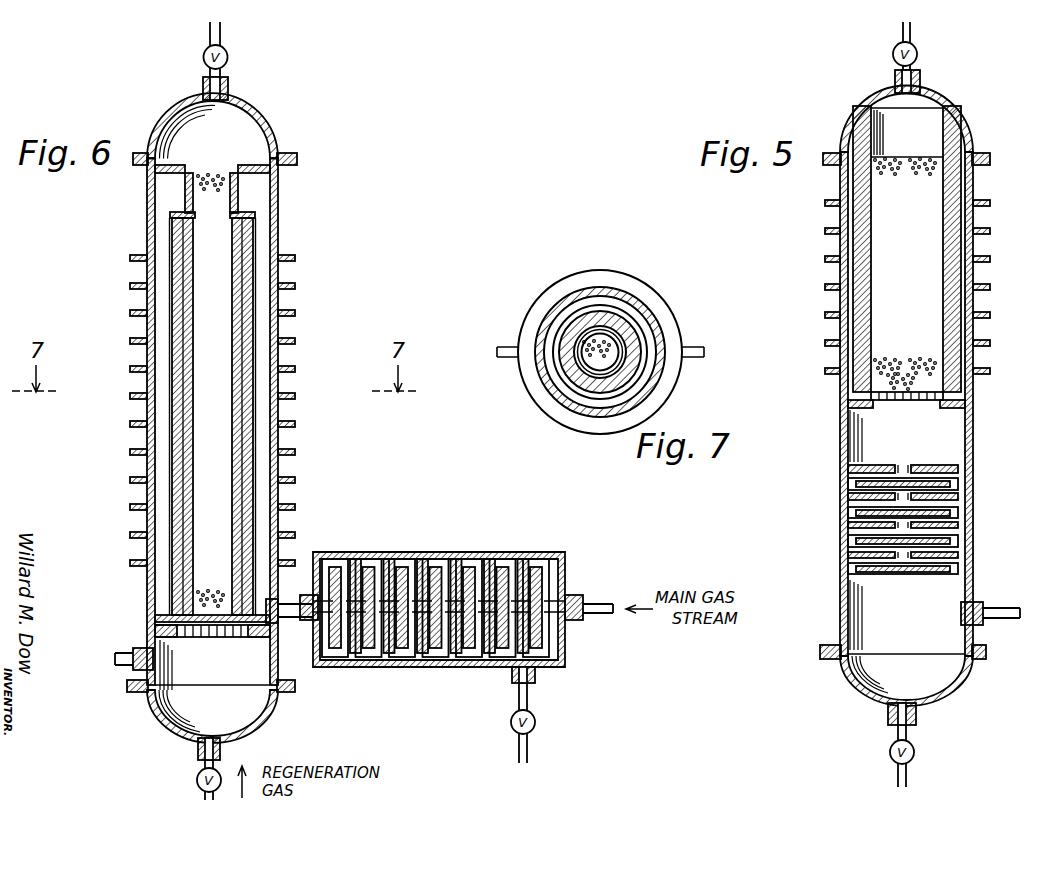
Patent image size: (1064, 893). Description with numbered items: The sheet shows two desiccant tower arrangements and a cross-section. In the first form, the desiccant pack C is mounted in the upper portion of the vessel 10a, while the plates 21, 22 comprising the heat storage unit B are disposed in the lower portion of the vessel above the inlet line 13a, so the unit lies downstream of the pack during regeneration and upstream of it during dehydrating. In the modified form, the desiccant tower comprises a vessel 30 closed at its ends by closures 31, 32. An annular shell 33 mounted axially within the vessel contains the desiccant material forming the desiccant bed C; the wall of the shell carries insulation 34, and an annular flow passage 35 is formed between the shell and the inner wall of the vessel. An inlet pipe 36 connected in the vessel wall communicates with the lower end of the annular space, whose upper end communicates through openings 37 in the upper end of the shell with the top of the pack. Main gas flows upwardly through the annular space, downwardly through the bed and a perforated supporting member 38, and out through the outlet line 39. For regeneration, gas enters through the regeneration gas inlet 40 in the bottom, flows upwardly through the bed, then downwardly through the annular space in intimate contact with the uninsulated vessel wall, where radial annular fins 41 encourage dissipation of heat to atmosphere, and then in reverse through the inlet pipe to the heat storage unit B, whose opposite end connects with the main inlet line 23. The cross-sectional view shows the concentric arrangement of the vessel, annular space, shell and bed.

In FIG. 5, the vessel 10a is at (975, 424).
In FIG. 5, the inlet line 13a is at (1000, 611).
In FIG. 6, the plate 21 is at (395, 553).
In FIG. 5, the plate 21 is at (947, 469).
In FIG. 6, the plate 22 is at (437, 566).
In FIG. 5, the plate 22 is at (951, 487).
In FIG. 6, the main inlet line 23 is at (596, 600).
In FIG. 6, the vessel 30 is at (276, 301).
In FIG. 7, the vessel 30 is at (548, 316).
In FIG. 6, the closure 31 is at (268, 121).
In FIG. 6, the closure 32 is at (256, 725).
In FIG. 6, the annular shell 33 is at (239, 236).
In FIG. 7, the annular shell 33 is at (604, 332).
In FIG. 6, the insulation 34 is at (243, 410).
In FIG. 6, the annular flow passage 35 is at (258, 489).
In FIG. 7, the annular flow passage 35 is at (594, 304).
In FIG. 6, the inlet pipe 36 is at (292, 624).
In FIG. 6, the openings 37 is at (239, 201).
In FIG. 6, the perforated supporting member 38 is at (213, 641).
In FIG. 6, the outlet line 39 is at (123, 650).
In FIG. 6, the regeneration gas inlet 40 is at (198, 776).
In FIG. 6, the radial annular fins 41 is at (130, 397).
In FIG. 5, the radial annular fins 41 is at (986, 313).
In FIG. 6, the heat storage unit B is at (441, 625).
In FIG. 5, the heat storage unit B is at (937, 508).
In FIG. 6, the desiccant bed C is at (217, 356).
In FIG. 7, the desiccant bed C is at (609, 340).
In FIG. 5, the desiccant bed C is at (920, 246).